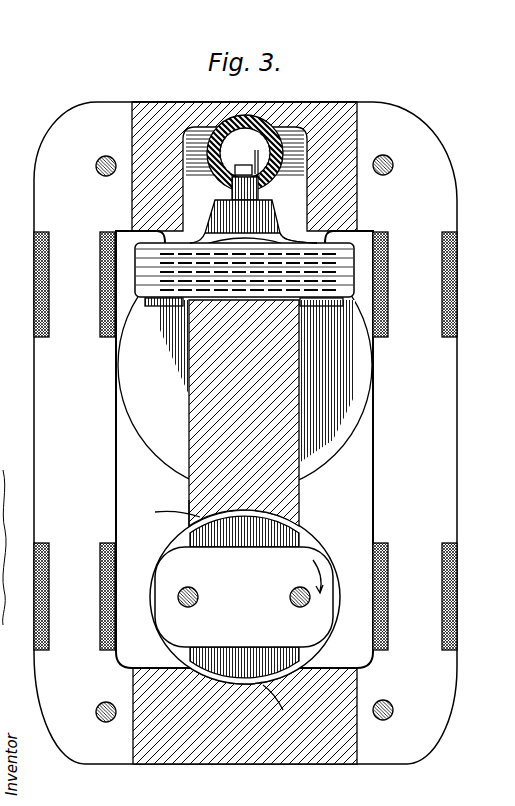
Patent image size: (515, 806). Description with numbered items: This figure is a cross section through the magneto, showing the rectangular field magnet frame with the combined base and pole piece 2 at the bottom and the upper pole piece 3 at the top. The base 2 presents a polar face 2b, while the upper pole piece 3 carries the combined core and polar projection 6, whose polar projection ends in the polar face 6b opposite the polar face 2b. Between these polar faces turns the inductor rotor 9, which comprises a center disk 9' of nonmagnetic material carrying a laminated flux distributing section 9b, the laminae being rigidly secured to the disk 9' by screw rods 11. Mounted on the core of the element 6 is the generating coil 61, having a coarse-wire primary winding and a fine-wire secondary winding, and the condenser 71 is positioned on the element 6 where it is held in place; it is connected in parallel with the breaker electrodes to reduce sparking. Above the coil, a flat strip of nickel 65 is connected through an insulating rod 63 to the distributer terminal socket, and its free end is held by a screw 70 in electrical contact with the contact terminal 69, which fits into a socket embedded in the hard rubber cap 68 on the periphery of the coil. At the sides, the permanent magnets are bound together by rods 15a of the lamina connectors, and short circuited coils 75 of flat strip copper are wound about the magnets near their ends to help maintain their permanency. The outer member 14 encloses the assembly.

The combined base and pole piece 2 is at (233, 765).
The polar face 2b is at (282, 704).
The upper pole piece 3 is at (278, 104).
The combined core and polar projection 6 is at (283, 416).
The polar face 6b is at (207, 513).
The inductor rotor 9 is at (241, 597).
The center disk 9' is at (176, 518).
The flux distributing section 9b is at (305, 560).
The screw rods 11 is at (199, 602).
The cover plate 14 is at (242, 433).
The rods 15a is at (97, 170).
The generating coil 61 is at (245, 365).
The insulating rod 63 is at (221, 172).
The flat strip of nickel 65 is at (268, 193).
The hard rubber cap 68 is at (298, 232).
The contact terminal 69 is at (251, 221).
The screw 70 is at (245, 153).
The condenser 71 is at (168, 301).
The short circuited coils 75 is at (100, 306).